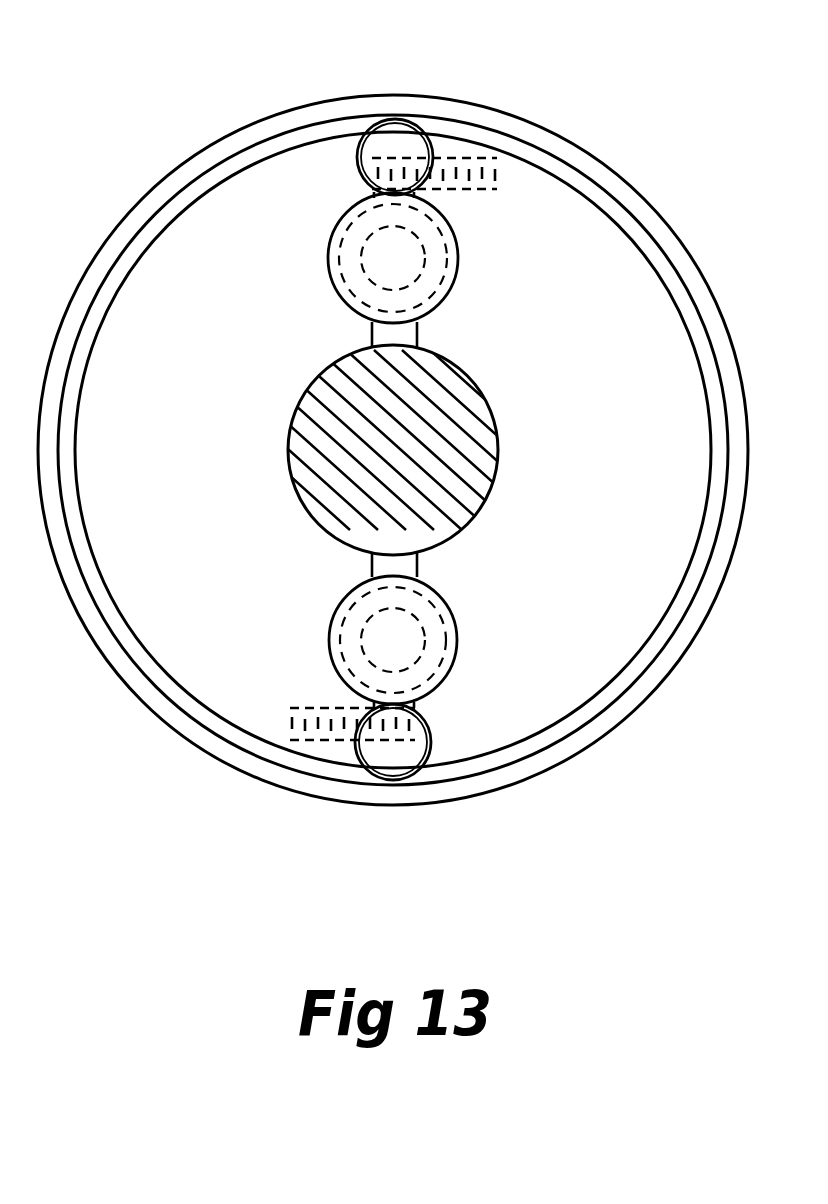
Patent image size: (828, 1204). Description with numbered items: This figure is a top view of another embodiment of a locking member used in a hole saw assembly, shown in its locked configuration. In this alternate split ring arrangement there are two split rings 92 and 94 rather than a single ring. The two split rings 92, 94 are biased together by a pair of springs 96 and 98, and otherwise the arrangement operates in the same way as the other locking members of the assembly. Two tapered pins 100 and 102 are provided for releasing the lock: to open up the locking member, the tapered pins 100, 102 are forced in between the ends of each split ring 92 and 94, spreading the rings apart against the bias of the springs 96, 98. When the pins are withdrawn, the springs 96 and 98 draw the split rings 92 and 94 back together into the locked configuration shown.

The split ring 92 is at (628, 475).
The split ring 94 is at (225, 475).
The spring 96 is at (320, 727).
The spring 98 is at (463, 172).
The tapered pin 100 is at (393, 752).
The tapered pin 102 is at (388, 142).